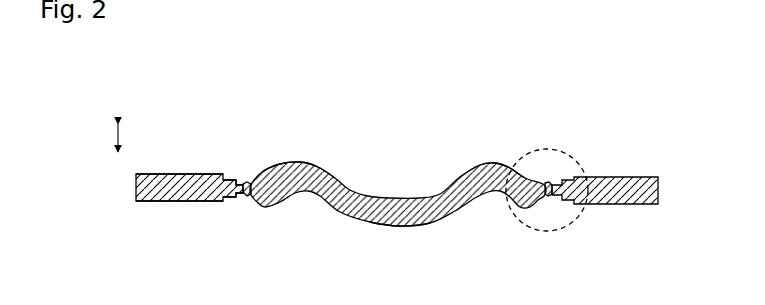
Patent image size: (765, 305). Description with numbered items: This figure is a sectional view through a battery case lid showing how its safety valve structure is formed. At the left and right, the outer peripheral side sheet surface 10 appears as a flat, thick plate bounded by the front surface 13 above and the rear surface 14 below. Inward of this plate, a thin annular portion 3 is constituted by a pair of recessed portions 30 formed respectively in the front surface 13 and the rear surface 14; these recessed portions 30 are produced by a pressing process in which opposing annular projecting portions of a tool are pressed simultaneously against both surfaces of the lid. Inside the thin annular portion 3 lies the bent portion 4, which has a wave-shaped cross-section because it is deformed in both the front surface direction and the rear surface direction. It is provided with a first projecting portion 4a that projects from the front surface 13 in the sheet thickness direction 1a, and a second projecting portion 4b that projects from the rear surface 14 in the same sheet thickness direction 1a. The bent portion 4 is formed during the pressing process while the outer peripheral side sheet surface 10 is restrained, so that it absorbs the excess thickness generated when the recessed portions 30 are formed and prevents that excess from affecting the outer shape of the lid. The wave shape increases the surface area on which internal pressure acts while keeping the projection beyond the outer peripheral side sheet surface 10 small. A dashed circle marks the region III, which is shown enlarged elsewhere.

The sheet thickness direction 1a is at (116, 138).
The thin annular portion 3 is at (220, 168).
The bent portion 4 is at (398, 183).
The first projecting portion 4a is at (300, 163).
The second projecting portion 4b is at (397, 228).
The outer peripheral side sheet surface 10 is at (198, 174).
The front surface 13 is at (168, 173).
The rear surface 14 is at (170, 203).
The recessed portions 30 is at (234, 179).
The region III is at (567, 149).